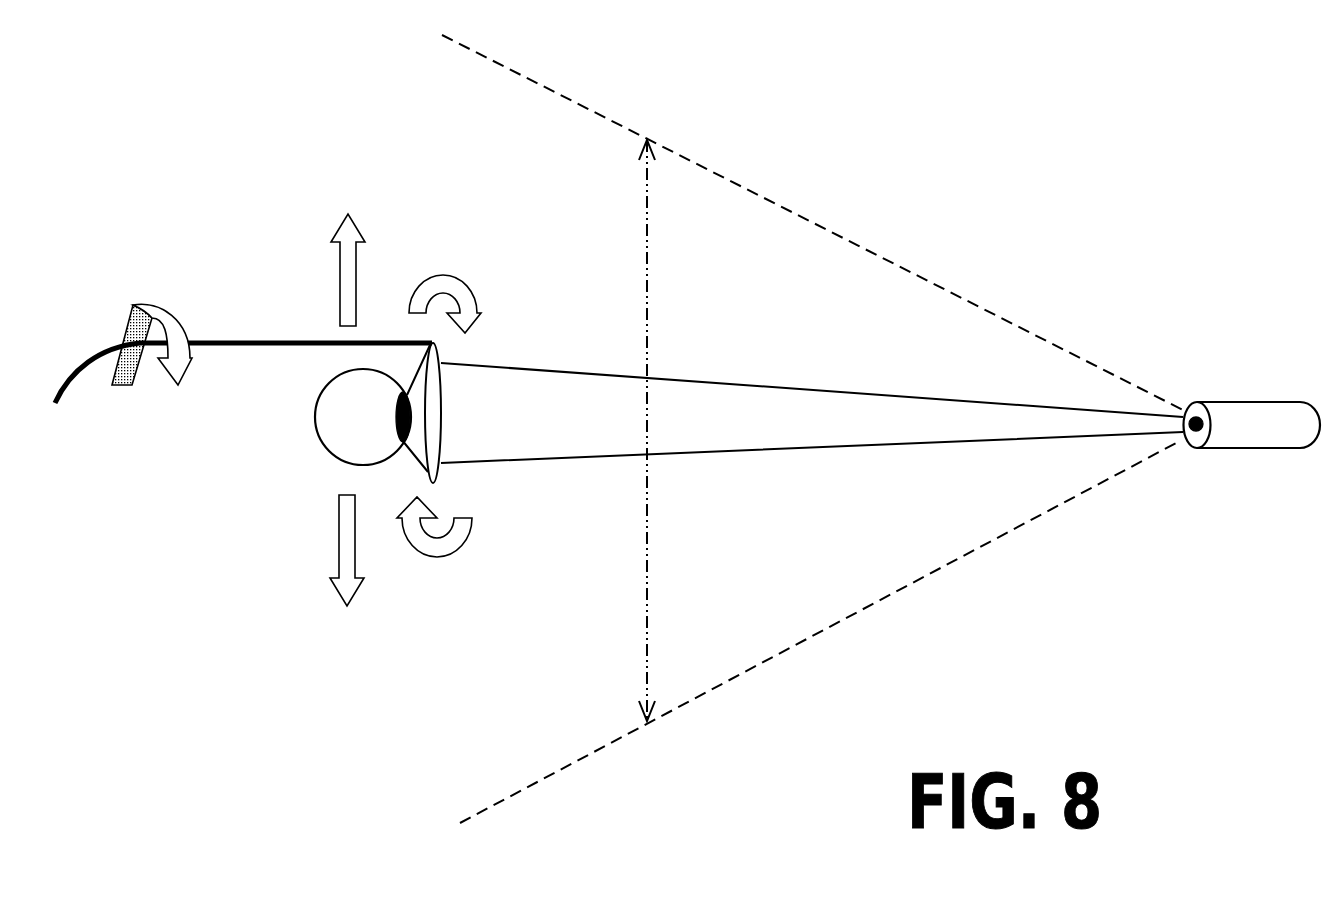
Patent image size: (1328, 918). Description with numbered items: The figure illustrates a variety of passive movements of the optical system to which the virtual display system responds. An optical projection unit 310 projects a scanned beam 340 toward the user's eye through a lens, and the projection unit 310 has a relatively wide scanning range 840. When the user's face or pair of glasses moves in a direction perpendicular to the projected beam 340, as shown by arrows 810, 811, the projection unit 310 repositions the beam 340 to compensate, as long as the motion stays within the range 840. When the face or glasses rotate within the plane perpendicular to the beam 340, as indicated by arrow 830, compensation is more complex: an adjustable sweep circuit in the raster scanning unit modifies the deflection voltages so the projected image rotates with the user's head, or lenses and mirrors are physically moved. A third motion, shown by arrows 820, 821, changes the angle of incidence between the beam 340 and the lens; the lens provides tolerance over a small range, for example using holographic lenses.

The optical projection unit 310 is at (1258, 432).
The scanned beam 340 is at (802, 417).
The arrow 810 is at (347, 525).
The arrow 811 is at (347, 277).
The arrow 820 is at (427, 543).
The arrow 821 is at (458, 290).
The arrow 830 is at (147, 308).
The scanning range 840 is at (647, 275).